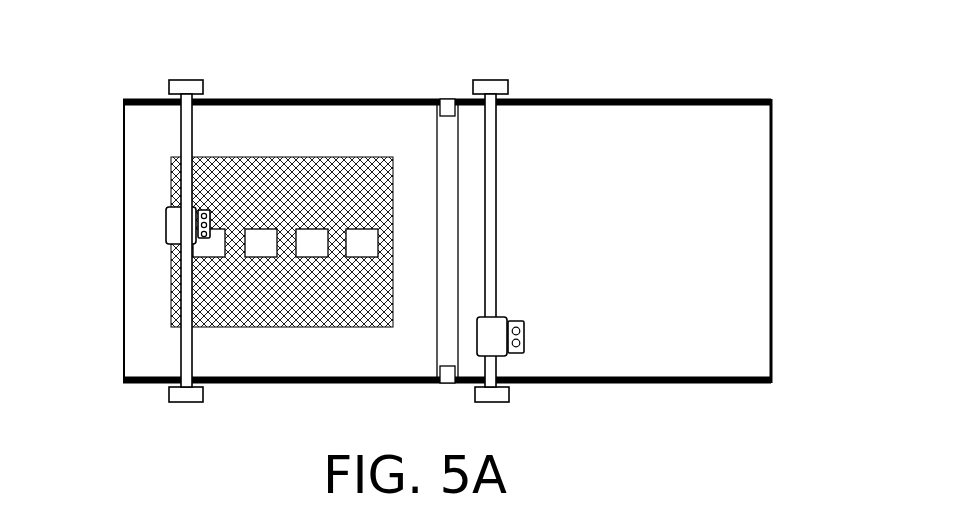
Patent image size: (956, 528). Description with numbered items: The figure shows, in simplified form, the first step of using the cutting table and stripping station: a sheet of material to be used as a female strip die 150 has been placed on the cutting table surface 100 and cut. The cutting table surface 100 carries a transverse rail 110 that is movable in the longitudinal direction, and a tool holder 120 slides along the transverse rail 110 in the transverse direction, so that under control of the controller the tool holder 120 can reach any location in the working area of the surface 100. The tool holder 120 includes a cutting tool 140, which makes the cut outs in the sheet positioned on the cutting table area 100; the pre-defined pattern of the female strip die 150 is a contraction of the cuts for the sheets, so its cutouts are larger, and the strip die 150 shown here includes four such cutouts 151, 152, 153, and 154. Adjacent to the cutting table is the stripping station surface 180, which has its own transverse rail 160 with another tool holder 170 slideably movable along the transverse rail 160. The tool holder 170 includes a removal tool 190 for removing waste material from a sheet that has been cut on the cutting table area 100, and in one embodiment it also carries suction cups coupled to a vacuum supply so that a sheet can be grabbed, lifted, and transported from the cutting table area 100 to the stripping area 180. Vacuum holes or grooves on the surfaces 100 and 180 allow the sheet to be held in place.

The cutting table surface 100 is at (343, 99).
The transverse rail 110 is at (181, 129).
The tool holder 120 is at (166, 234).
The cutting tool 140 is at (205, 207).
The female strip die 150 is at (238, 157).
The cutout 151 is at (209, 243).
The cutout 152 is at (261, 243).
The cutout 153 is at (312, 243).
The cutout 154 is at (362, 243).
The transverse rail 160 is at (497, 135).
The tool holder 170 is at (508, 357).
The stripping station surface 180 is at (707, 98).
The removal tool 190 is at (524, 338).